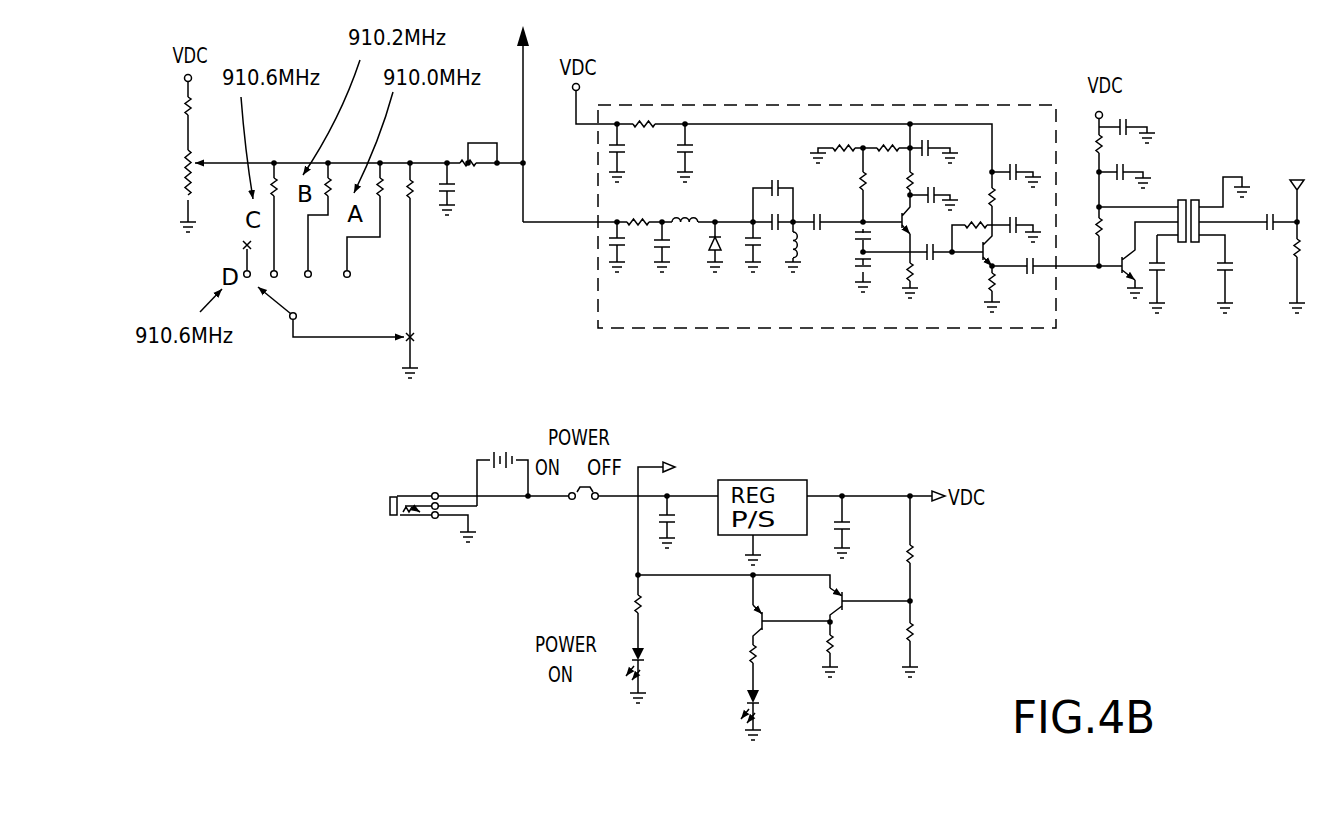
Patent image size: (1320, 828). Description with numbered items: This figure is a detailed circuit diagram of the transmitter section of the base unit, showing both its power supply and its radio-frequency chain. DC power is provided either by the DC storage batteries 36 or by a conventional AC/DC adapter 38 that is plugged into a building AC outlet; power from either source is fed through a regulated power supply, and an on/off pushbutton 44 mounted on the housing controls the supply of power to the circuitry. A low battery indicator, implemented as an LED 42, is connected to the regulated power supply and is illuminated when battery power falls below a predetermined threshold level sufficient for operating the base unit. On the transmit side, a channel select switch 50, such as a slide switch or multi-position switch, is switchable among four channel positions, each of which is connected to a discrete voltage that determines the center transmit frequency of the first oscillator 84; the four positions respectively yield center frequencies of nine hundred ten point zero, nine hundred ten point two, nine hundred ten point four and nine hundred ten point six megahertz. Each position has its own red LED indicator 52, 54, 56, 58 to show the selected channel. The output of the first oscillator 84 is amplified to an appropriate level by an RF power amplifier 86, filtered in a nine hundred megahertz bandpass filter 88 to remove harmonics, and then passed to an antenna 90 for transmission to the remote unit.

The DC storage batteries 36 is at (505, 442).
The AC/DC adapter 38 is at (412, 493).
The LED 42 is at (774, 660).
The on/off pushbutton 44 is at (581, 503).
The channel select switch 50 is at (287, 319).
The red LED indicator 52 is at (377, 272).
The red LED indicator 54 is at (316, 279).
The red LED indicator 56 is at (279, 279).
The red LED indicator 58 is at (231, 251).
The first oscillator 84 is at (775, 310).
The RF power amplifier 86 is at (1169, 282).
The 900 MHz bandpass filter 88 is at (1279, 309).
The antenna 90 is at (1290, 194).